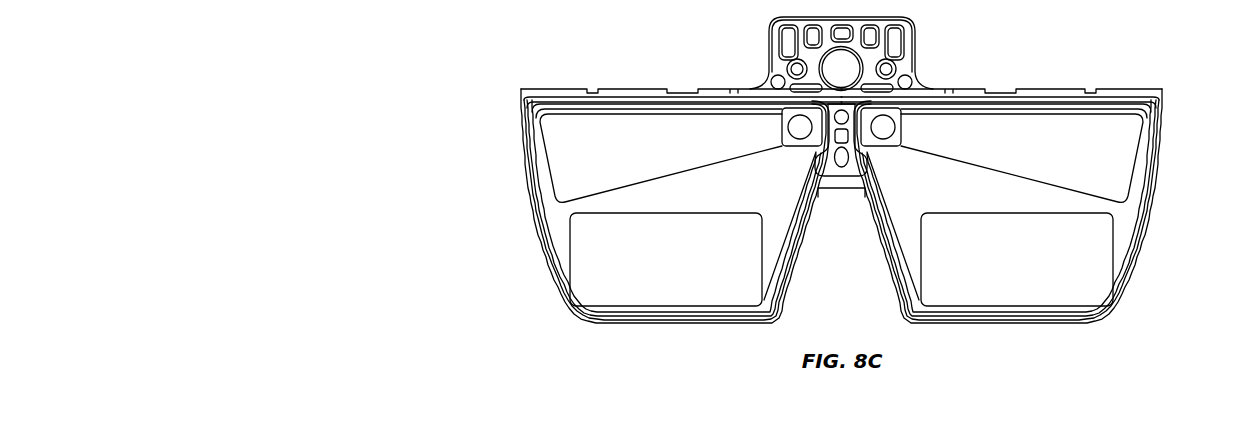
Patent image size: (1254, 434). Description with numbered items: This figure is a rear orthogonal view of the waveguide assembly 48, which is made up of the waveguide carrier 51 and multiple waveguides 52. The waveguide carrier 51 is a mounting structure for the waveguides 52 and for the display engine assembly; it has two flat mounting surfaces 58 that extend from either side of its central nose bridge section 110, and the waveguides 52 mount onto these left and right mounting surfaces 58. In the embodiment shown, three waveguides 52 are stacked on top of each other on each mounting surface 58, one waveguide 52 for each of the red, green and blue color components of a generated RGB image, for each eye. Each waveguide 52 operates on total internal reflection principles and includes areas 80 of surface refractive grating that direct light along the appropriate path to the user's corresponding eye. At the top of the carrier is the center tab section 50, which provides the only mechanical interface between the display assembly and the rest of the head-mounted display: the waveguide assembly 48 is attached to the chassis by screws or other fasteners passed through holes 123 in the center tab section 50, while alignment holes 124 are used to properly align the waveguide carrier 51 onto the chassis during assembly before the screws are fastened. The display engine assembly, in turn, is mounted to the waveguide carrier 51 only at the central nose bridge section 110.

The waveguide assembly 48 is at (513, 46).
The center tab section 50 is at (912, 38).
The waveguide carrier 51 is at (1077, 88).
The waveguides 52 is at (557, 283).
The flat mounting surfaces 58 is at (523, 107).
The areas of surface refractive grating 80 is at (570, 230).
The central nose bridge section 110 is at (843, 190).
The holes 123 is at (805, 67).
The alignment holes 124 is at (763, 84).